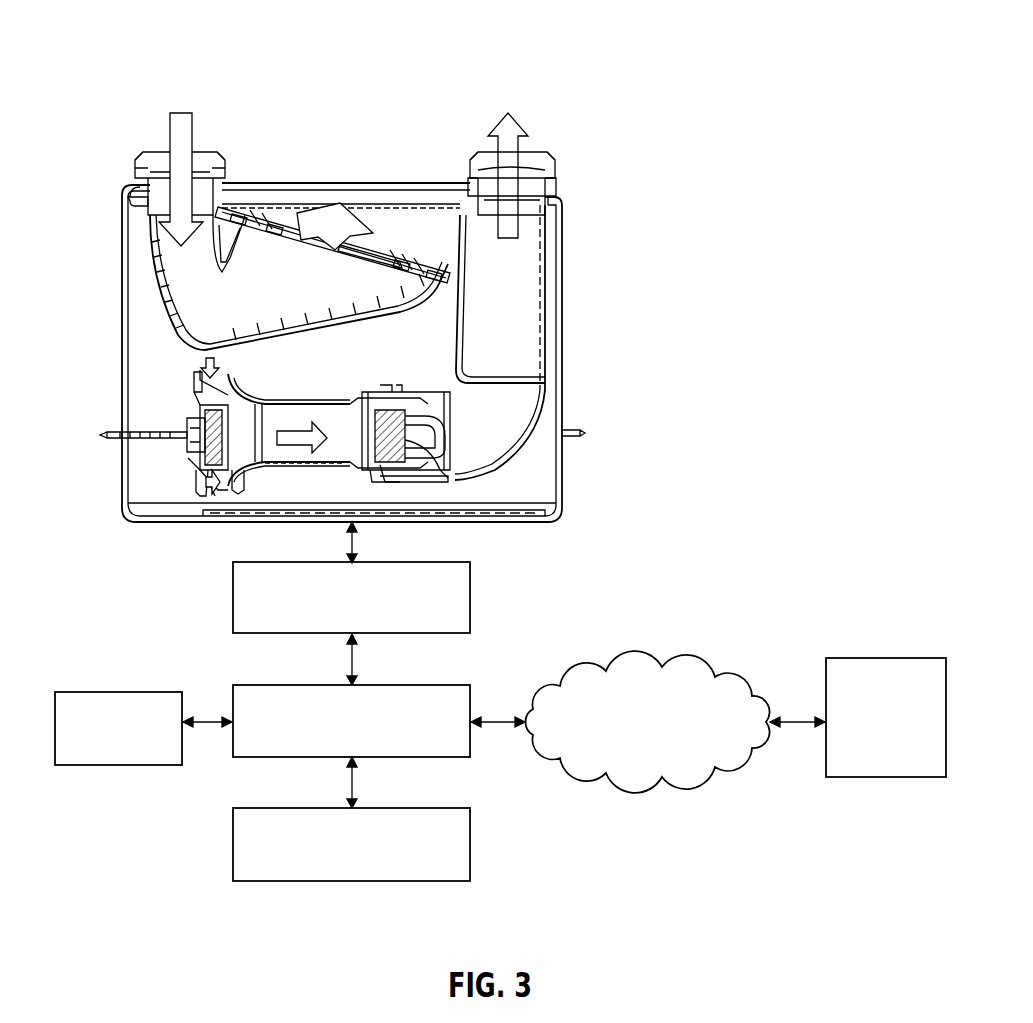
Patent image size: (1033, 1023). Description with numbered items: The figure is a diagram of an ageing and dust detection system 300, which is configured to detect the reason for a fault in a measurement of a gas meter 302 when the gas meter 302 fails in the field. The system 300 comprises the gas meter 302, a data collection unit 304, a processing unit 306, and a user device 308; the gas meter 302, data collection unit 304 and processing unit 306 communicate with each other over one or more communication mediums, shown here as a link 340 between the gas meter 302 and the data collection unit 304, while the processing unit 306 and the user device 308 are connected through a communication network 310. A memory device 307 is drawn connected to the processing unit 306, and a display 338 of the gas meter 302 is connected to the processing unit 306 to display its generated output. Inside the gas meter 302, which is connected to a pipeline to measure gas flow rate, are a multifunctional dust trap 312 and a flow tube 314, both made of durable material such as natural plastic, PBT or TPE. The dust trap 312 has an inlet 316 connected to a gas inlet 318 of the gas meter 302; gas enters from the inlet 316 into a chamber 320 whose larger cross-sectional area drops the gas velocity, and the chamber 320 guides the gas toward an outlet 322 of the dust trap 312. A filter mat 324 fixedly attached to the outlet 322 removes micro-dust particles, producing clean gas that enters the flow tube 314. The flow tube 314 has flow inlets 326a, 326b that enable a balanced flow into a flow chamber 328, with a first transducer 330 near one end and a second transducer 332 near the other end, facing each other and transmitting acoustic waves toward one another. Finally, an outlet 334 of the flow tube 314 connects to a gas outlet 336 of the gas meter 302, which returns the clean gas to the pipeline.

The ageing and dust detection system 300 is at (89, 84).
The gas meter 302 is at (123, 290).
The data collection unit 304 is at (351, 597).
The processing unit 306 is at (354, 721).
The memory device 307 is at (351, 844).
The user device 308 is at (886, 717).
The communication network 310 is at (675, 722).
The multifunctional dust trap 312 is at (170, 340).
The flow tube 314 is at (450, 362).
The inlet 316 is at (200, 147).
The gas inlet 318 is at (135, 185).
The chamber 320 is at (322, 282).
The outlet 322 is at (390, 232).
The filter mat 324 is at (385, 266).
The flow inlet 326a is at (205, 395).
The flow inlet 326b is at (201, 485).
The flow chamber 328 is at (317, 407).
The first transducer 330 is at (200, 443).
The second transducer 332 is at (450, 473).
The outlet 334 is at (527, 150).
The gas outlet 336 is at (548, 185).
The display 338 is at (118, 728).
The data connection 340 is at (362, 547).